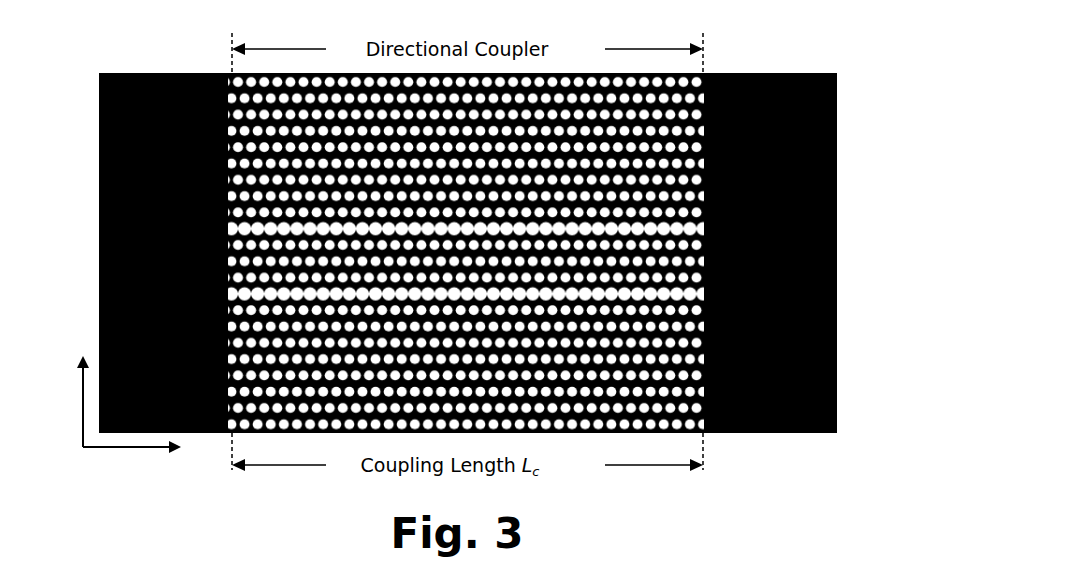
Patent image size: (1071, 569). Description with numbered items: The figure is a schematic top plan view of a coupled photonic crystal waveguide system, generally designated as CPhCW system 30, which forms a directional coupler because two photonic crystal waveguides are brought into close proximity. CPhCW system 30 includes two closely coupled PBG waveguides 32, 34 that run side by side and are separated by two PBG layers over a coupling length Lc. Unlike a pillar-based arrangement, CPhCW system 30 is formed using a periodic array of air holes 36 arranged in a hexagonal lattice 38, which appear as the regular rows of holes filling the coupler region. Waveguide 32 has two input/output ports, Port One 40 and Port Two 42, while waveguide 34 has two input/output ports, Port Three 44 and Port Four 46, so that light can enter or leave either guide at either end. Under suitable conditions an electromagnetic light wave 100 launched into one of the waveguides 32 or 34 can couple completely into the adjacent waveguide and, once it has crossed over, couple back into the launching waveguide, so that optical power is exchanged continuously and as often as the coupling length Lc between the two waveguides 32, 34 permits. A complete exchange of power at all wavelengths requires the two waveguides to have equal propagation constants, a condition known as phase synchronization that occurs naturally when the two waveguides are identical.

The CPhCW system 30 is at (483, 219).
The PBG waveguide 32 is at (837, 340).
The PBG waveguide 34 is at (837, 177).
The air holes 36 is at (578, 219).
The hexagonal lattice 38 is at (180, 73).
The Port 1 40 is at (99, 290).
The Port 2 42 is at (837, 286).
The Port 3 44 is at (837, 228).
The Port 4 46 is at (99, 200).
The electromagnetic light wave 100 is at (137, 433).